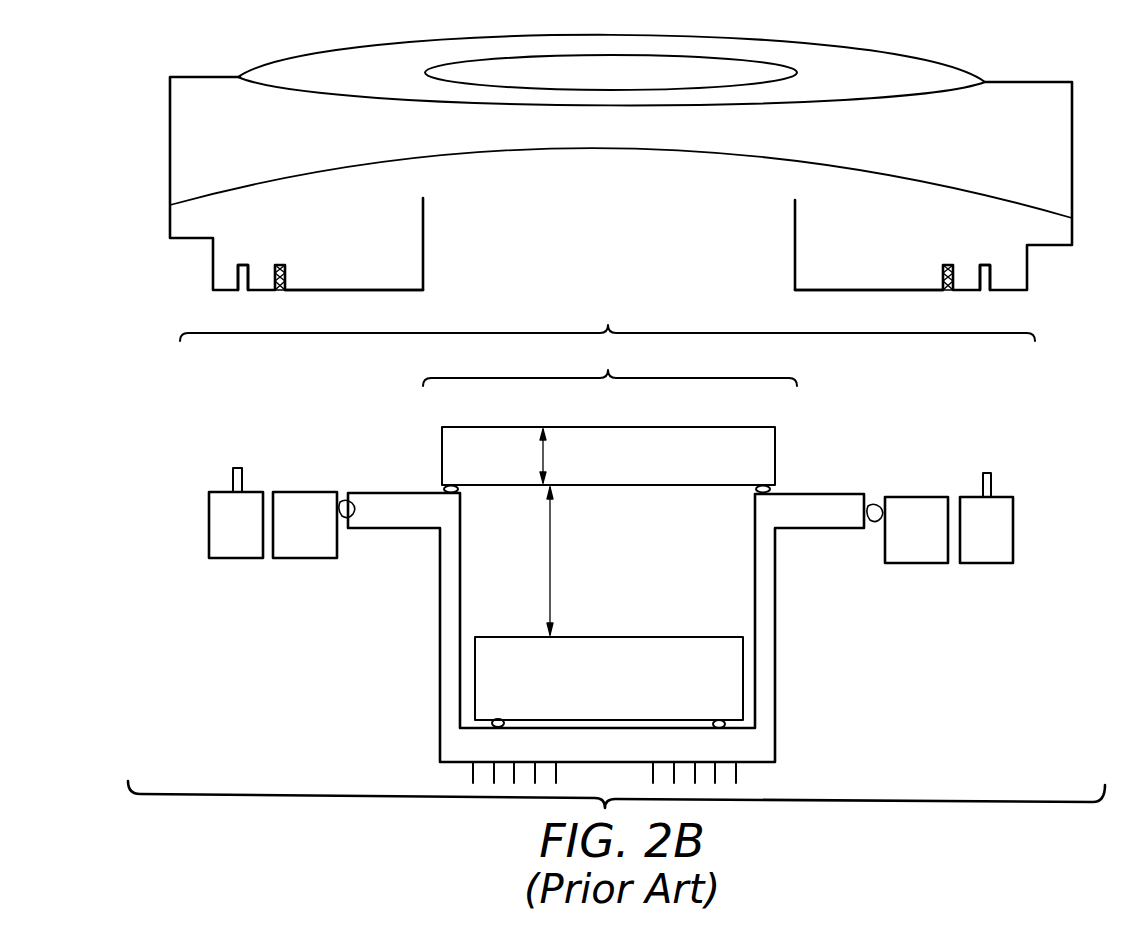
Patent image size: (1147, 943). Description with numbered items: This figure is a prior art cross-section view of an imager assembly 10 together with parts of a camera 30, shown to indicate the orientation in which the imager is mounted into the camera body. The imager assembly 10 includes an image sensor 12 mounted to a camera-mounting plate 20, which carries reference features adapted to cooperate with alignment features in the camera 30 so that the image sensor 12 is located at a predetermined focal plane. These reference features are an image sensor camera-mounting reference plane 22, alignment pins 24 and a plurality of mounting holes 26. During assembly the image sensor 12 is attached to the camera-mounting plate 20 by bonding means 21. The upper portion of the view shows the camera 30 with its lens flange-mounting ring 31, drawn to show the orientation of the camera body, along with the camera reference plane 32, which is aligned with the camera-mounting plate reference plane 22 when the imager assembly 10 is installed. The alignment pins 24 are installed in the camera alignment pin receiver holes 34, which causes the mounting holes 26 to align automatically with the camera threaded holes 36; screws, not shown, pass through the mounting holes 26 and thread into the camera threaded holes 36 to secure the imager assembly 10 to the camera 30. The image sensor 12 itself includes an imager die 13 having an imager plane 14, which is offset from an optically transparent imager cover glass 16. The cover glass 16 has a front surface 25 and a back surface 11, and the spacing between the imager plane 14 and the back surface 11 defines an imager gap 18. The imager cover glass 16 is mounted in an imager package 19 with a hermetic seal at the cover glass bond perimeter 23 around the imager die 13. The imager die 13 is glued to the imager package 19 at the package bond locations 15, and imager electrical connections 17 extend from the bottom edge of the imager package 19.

The imager assembly 10 is at (607, 319).
The back surface 11 is at (671, 488).
The image sensor 12 is at (610, 365).
The imager die 13 is at (598, 696).
The imager plane 14 is at (693, 636).
The package bond locations 15 is at (494, 718).
The imager cover glass 16 is at (548, 456).
The imager electrical connections 17 is at (452, 777).
The imager gap 18 is at (555, 558).
The imager package 19 is at (767, 736).
The camera-mounting plate 20 is at (292, 560).
The bonding means 21 is at (355, 520).
The image sensor camera-mounting reference plane 22 is at (306, 490).
The cover glass bond perimeter 23 is at (441, 487).
The alignment pins 24 is at (232, 478).
The front surface 25 is at (560, 427).
The mounting holes 26 is at (274, 490).
The camera 30 is at (148, 153).
The lens flange-mounting ring 31 is at (971, 75).
The camera reference plane 32 is at (352, 285).
The camera alignment pin receiver holes 34 is at (238, 262).
The camera threaded holes 36 is at (286, 270).